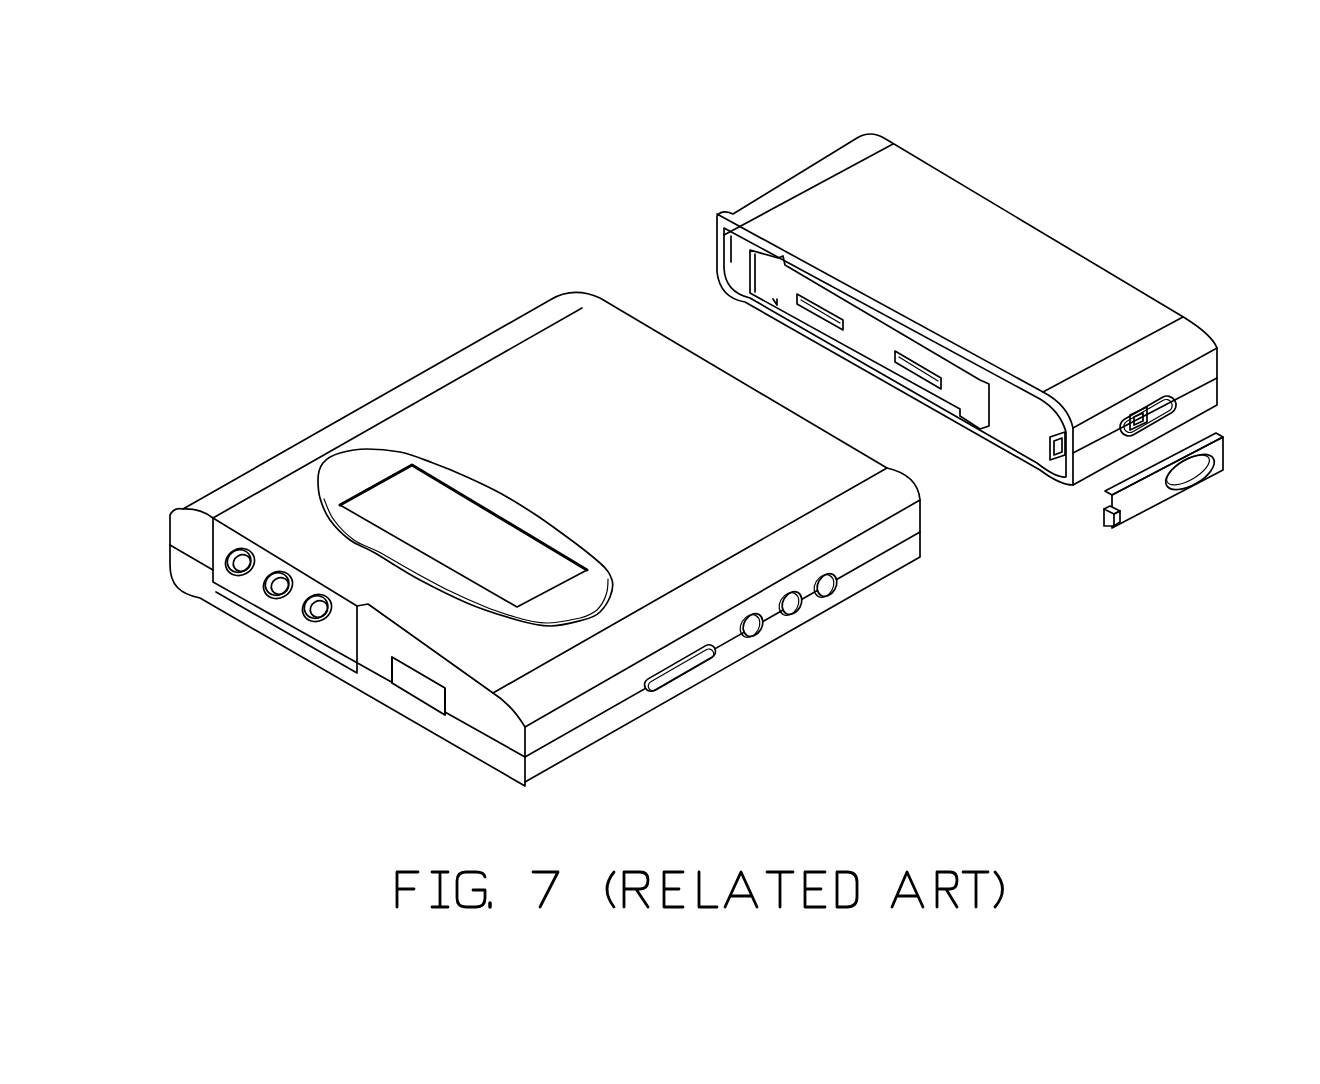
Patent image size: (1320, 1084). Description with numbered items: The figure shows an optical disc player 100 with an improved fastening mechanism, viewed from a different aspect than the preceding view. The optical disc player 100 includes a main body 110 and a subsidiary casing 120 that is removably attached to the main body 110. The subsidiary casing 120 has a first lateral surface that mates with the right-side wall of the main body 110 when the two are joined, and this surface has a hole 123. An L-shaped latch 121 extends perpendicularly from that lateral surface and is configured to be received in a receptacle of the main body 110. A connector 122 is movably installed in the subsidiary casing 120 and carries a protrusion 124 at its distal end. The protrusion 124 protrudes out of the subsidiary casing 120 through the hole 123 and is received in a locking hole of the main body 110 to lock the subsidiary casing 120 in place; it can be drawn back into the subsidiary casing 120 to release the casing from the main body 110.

The optical disc player 100 is at (484, 127).
The main body 110 is at (360, 365).
The subsidiary casing 120 is at (750, 180).
The L-shaped latch 121 is at (866, 338).
The connector 122 is at (1158, 497).
The hole 123 is at (1035, 463).
The protrusion 124 is at (1104, 521).